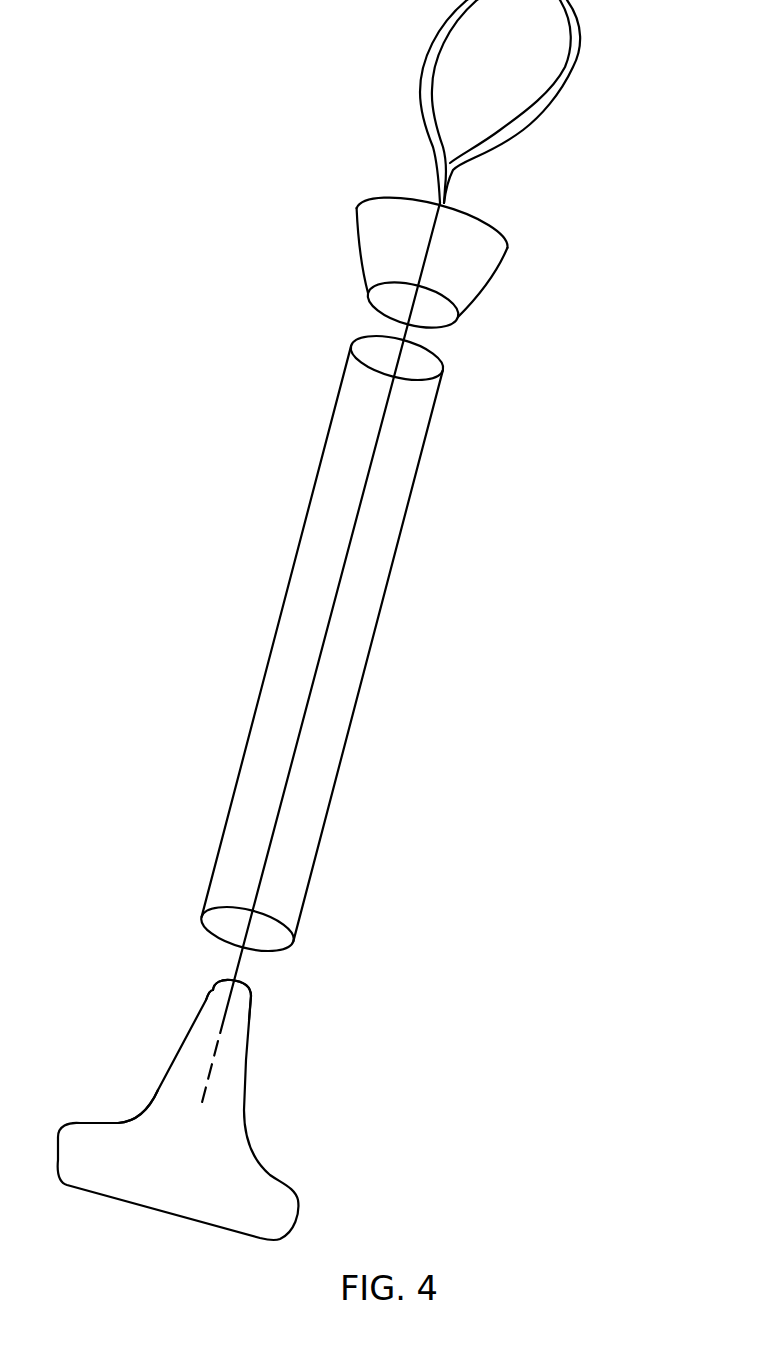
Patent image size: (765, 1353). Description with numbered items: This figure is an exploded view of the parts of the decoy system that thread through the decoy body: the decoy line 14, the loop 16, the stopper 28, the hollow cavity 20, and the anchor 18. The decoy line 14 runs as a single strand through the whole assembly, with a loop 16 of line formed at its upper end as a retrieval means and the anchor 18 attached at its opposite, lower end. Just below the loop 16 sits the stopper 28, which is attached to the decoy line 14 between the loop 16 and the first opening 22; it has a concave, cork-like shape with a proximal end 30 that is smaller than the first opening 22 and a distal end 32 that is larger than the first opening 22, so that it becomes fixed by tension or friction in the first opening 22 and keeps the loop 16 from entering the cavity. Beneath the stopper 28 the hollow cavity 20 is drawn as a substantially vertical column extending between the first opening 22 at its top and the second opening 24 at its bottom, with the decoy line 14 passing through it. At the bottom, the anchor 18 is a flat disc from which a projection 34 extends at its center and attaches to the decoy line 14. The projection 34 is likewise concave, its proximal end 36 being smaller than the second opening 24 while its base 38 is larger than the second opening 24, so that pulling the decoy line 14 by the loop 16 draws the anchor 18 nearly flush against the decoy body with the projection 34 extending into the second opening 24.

The decoy line 14 is at (291, 757).
The loop 16 is at (575, 66).
The anchor 18 is at (195, 1093).
The hollow cavity 20 is at (334, 659).
The first opening 22 is at (415, 360).
The second opening 24 is at (265, 933).
The stopper 28 is at (434, 265).
The proximal end 30 is at (387, 300).
The distal end 32 is at (480, 217).
The projection 34 is at (203, 1082).
The proximal end 36 is at (230, 978).
The base 38 is at (122, 1120).